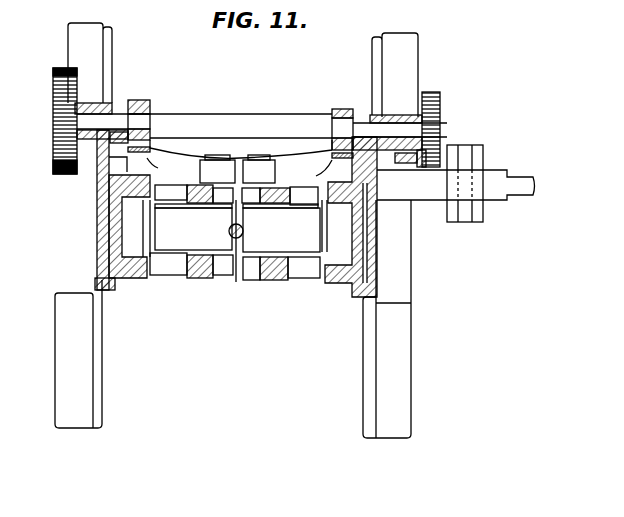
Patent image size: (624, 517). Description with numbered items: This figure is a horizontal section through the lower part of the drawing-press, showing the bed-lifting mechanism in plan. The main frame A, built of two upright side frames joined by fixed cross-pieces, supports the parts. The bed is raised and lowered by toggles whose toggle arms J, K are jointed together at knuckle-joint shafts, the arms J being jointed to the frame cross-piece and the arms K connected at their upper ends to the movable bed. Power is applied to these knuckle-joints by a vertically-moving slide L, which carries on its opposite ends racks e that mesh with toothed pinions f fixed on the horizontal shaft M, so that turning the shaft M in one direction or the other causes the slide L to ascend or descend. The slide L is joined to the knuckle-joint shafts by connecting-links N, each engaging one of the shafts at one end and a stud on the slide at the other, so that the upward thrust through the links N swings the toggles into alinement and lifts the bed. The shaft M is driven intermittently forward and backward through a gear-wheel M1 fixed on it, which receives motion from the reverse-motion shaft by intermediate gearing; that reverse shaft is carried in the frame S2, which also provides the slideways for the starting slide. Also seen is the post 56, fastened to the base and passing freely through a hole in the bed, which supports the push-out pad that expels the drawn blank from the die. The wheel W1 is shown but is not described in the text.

The gear-wheel M1 is at (53, 160).
The horizontal shaft M is at (196, 114).
The toothed pinion f is at (138, 100).
The vertically-moving slide L is at (283, 150).
The rack e is at (239, 172).
The connecting-link N is at (258, 160).
The wheel W1 is at (405, 112).
The main frame A is at (342, 283).
The toggle arm J is at (260, 245).
The toggle arm K is at (237, 228).
The post 56 is at (243, 232).
The frame S2 is at (493, 193).